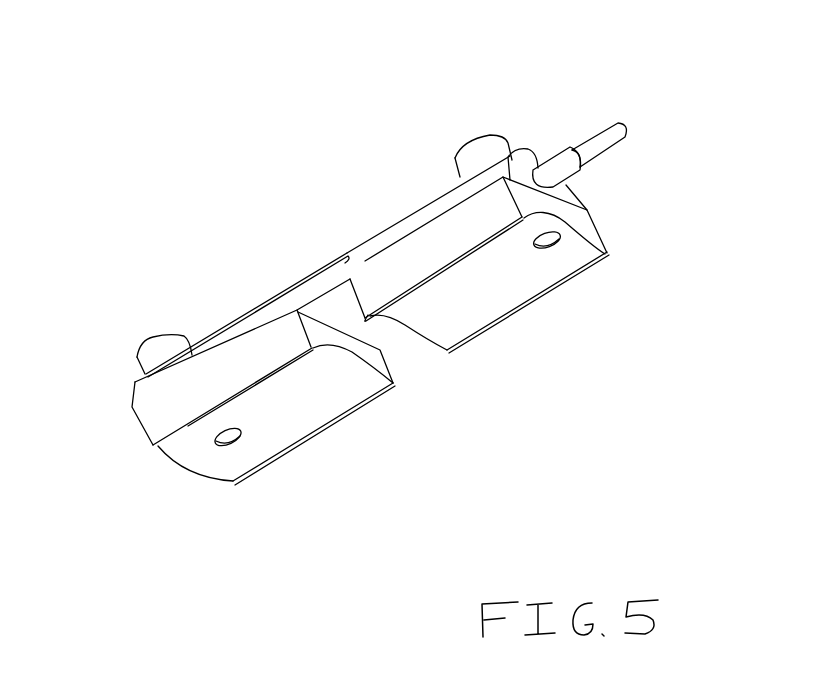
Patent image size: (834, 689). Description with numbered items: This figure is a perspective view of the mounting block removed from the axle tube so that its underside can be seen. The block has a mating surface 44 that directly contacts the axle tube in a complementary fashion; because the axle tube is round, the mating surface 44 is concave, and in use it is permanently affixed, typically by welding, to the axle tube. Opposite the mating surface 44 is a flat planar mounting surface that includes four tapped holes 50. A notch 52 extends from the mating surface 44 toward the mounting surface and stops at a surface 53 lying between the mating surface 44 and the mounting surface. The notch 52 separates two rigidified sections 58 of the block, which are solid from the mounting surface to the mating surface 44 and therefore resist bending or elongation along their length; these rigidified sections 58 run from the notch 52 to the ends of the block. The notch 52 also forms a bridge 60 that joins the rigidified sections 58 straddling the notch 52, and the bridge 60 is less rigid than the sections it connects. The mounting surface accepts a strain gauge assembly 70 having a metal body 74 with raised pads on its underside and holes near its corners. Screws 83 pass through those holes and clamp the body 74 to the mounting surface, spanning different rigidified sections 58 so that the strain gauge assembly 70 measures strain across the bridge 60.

The mating surface 44 is at (481, 316).
The tapped holes 50 is at (556, 250).
The notch 52 is at (430, 369).
The surface 53 is at (296, 278).
The rigidified sections 58 is at (177, 415).
The bridge 60 is at (323, 312).
The strain gauge assembly 70 is at (368, 228).
The metal body 74 is at (412, 220).
The screws 83 is at (153, 338).